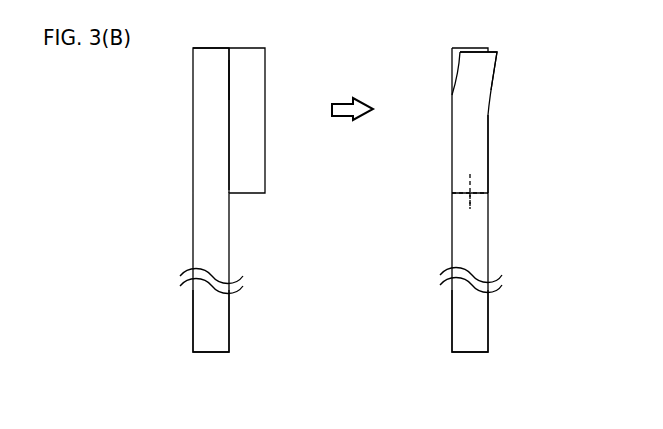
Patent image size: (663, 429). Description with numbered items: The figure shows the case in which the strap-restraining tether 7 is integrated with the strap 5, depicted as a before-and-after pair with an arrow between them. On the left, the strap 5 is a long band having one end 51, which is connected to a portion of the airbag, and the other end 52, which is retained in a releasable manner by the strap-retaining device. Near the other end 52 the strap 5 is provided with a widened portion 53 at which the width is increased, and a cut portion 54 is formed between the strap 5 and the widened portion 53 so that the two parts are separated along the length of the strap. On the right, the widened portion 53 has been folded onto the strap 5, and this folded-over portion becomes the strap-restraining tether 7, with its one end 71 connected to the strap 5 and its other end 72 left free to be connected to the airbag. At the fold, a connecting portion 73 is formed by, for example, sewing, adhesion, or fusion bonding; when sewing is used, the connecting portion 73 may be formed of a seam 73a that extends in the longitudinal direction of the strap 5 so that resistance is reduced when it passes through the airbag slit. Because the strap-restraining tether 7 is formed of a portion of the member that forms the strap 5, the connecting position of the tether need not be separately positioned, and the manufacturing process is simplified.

The strap 5 is at (193, 142).
The one end of the strap 51 is at (173, 333).
The other end of the strap 52 is at (173, 64).
The widened portion 53 is at (267, 67).
The cut portion 54 is at (229, 155).
The strap-restraining tether 7 is at (489, 138).
The one end of the strap-restraining tether 71 is at (508, 182).
The other end of the strap-restraining tether 72 is at (514, 64).
The connecting portion 73 is at (456, 211).
The seam 73a is at (468, 176).